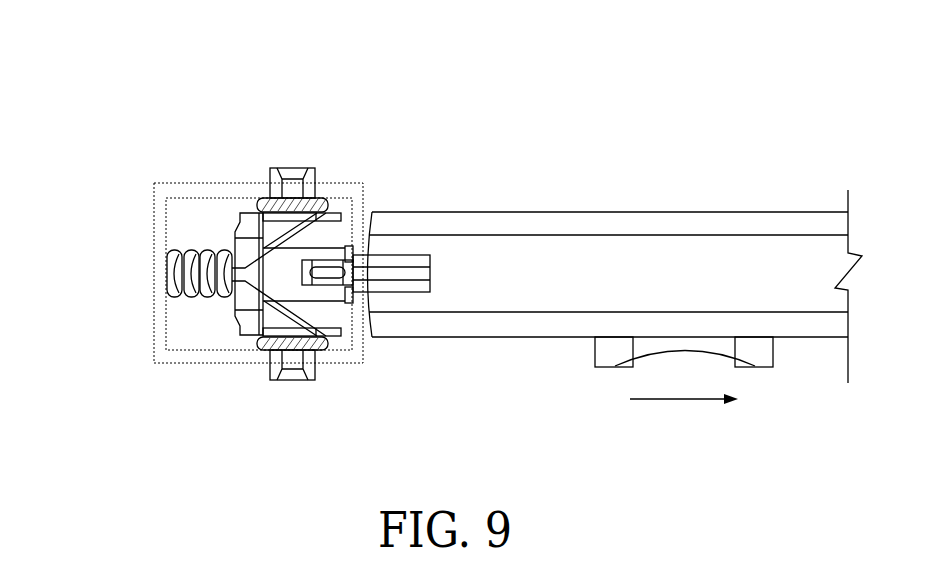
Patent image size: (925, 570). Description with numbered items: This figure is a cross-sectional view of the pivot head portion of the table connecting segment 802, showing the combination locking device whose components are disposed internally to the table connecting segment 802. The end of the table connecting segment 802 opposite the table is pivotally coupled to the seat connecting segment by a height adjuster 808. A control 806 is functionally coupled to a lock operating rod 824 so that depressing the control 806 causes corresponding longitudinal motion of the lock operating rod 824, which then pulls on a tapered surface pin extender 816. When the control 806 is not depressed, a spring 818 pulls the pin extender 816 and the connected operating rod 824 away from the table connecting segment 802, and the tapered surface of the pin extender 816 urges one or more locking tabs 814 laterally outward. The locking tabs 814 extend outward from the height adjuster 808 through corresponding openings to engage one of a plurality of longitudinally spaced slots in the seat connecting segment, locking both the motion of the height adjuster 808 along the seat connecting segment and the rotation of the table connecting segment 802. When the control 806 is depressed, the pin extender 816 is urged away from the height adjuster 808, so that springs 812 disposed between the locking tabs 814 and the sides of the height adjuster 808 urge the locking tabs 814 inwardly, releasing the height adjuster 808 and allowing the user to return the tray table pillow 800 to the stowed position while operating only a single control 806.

The tray table pillow 800 is at (118, 46).
The table connecting segment 802 is at (622, 202).
The control 806 is at (621, 364).
The height adjuster 808 is at (355, 176).
The springs 812 is at (265, 199).
The locking tabs 814 is at (290, 168).
The tapered surface pin extender 816 is at (283, 280).
The spring 818 is at (168, 276).
The lock operating rod 824 is at (398, 273).